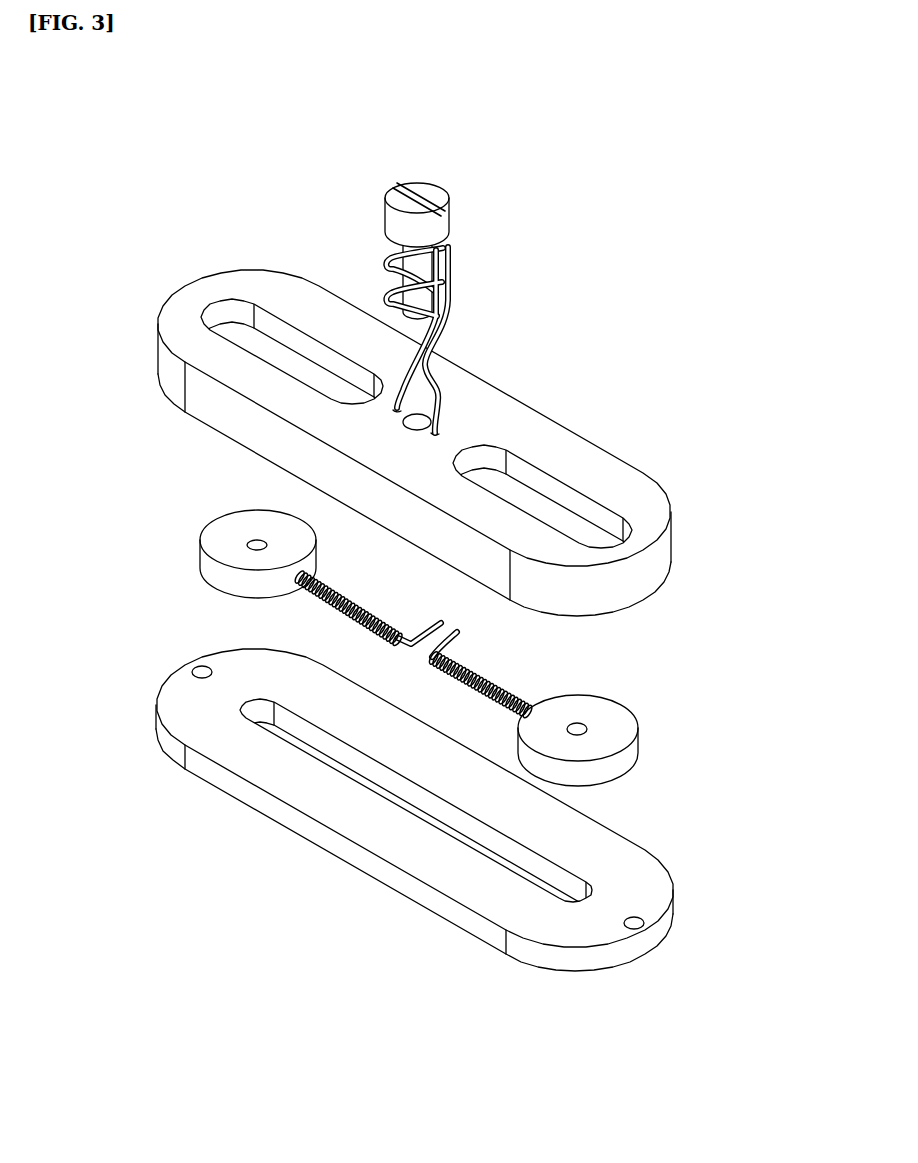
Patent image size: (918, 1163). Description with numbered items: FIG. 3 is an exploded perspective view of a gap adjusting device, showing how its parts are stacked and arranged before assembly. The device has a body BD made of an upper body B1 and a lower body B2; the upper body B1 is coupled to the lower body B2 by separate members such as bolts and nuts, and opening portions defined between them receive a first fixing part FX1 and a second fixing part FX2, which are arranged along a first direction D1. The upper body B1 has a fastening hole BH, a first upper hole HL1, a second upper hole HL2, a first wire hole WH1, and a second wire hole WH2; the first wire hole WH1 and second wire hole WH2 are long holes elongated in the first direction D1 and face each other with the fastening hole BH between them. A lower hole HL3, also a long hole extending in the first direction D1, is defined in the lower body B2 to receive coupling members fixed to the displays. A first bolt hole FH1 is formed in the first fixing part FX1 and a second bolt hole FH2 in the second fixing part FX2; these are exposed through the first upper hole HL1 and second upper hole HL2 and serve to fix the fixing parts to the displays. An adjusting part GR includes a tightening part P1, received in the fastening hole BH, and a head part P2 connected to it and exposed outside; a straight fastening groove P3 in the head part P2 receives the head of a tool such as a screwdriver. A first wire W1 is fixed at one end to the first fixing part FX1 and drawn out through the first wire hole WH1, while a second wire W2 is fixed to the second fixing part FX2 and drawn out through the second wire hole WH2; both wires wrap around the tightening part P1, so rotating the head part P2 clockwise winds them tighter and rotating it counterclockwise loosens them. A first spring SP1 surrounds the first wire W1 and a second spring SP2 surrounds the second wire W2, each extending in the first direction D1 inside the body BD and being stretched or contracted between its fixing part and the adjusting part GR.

The body BD is at (468, 572).
The upper body B1 is at (458, 395).
The lower body B2 is at (432, 810).
The first upper hole HL1 is at (243, 318).
The second upper hole HL2 is at (598, 518).
The lower hole HL3 is at (357, 765).
The fastening hole BH is at (413, 433).
The first wire hole WH1 is at (392, 411).
The second wire hole WH2 is at (445, 432).
The adjusting part GR is at (492, 214).
The tightening part P1 is at (430, 258).
The head part P2 is at (446, 222).
The fastening groove P3 is at (412, 182).
The first wire W1 is at (400, 352).
The second wire W2 is at (436, 378).
The first fixing part FX1 is at (208, 560).
The second fixing part FX2 is at (609, 720).
The first bolt hole FH1 is at (250, 550).
The second bolt hole FH2 is at (587, 726).
The first spring SP1 is at (330, 609).
The second spring SP2 is at (512, 692).
The first direction D1 is at (254, 883).